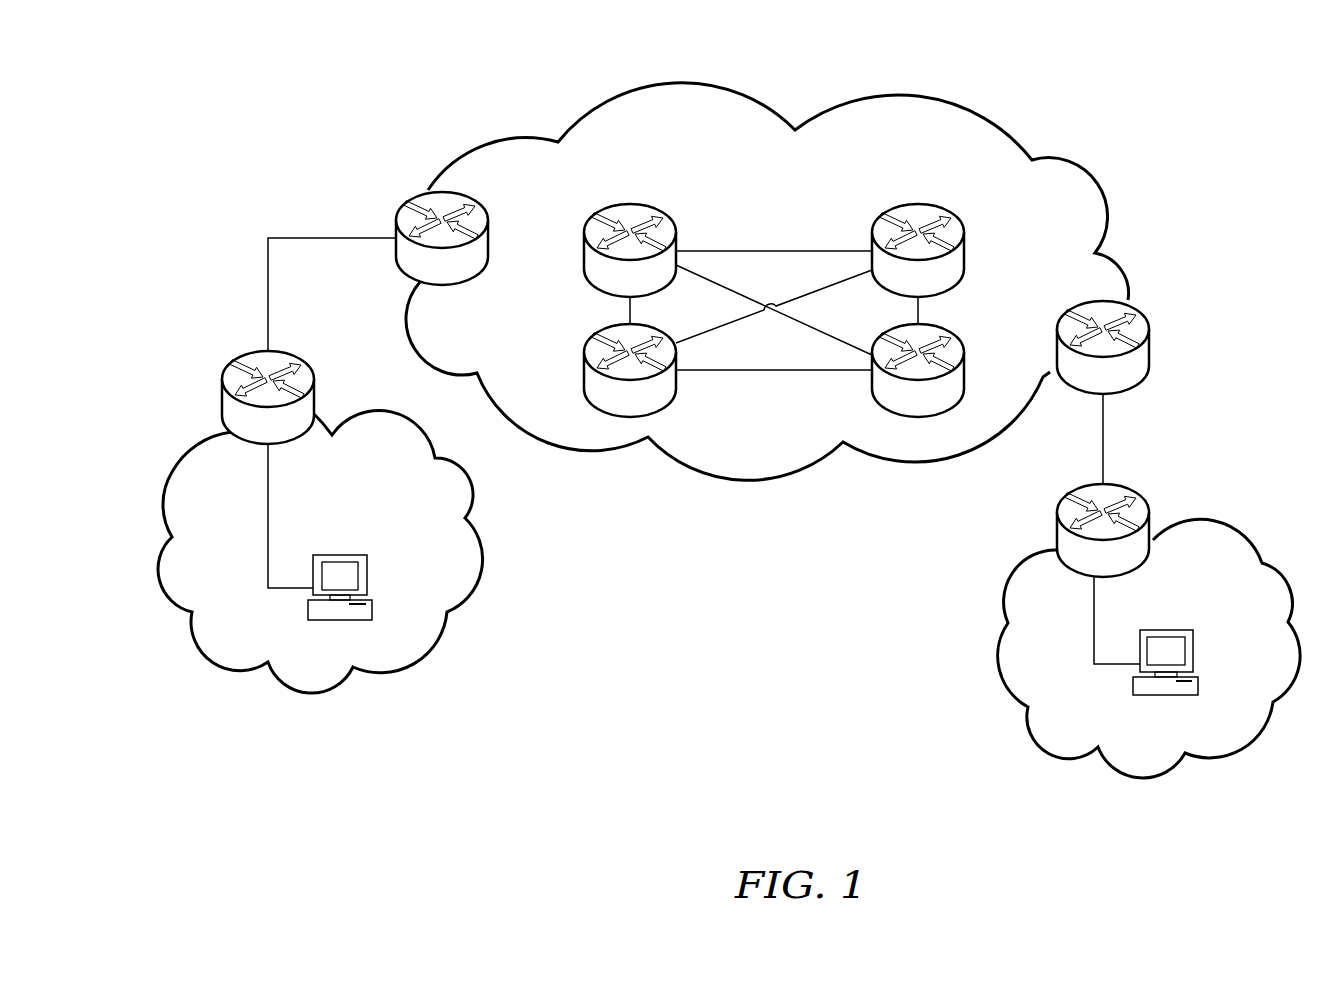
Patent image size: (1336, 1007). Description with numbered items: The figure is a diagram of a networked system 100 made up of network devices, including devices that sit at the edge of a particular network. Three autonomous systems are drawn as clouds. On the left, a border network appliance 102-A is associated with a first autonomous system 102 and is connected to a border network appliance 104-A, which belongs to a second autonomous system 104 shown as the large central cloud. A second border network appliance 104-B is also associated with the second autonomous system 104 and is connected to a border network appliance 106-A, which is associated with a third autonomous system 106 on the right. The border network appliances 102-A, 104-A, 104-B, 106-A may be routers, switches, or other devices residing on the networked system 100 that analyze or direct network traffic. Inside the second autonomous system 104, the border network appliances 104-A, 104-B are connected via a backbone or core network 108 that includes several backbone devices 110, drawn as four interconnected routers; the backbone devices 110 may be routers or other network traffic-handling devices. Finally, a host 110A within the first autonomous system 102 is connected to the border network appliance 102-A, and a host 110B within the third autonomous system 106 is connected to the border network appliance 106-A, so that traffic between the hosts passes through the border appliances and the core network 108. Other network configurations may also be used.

The networked system 100 is at (978, 45).
The first autonomous system 102 is at (417, 668).
The border network appliance 102-A is at (302, 352).
The second autonomous system 104 is at (832, 458).
The border network appliance 104-A is at (489, 210).
The second border network appliance 104-B is at (1147, 320).
The third autonomous system 106 is at (1237, 757).
The border network appliance 106-A is at (1147, 500).
The core network 108 is at (762, 215).
The backbone devices 110 is at (667, 213).
The host 110A is at (357, 555).
The host 110B is at (1180, 630).